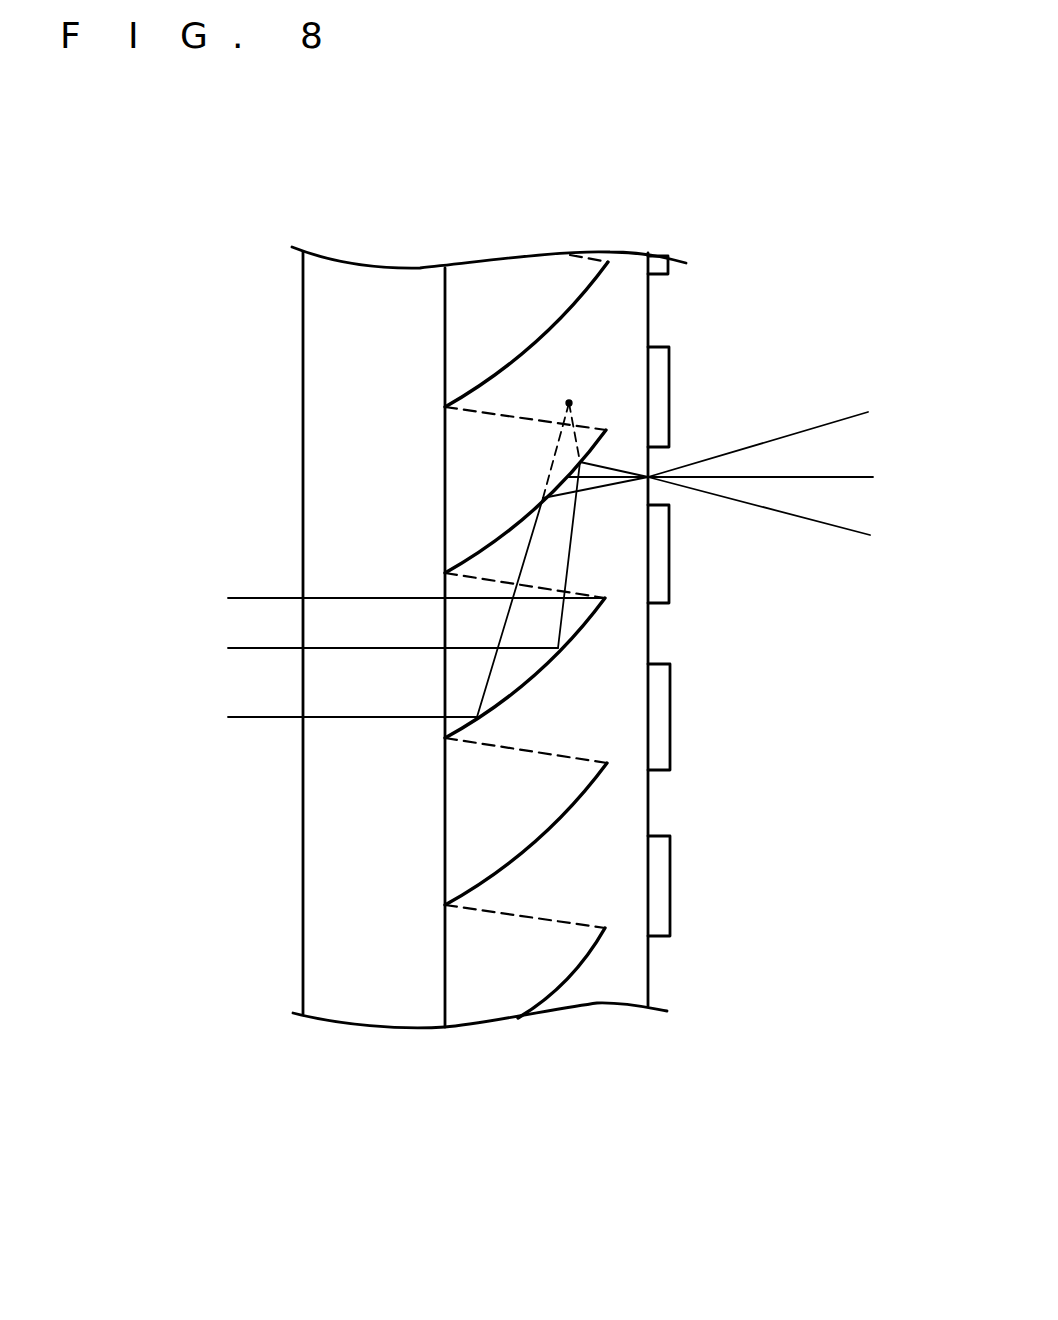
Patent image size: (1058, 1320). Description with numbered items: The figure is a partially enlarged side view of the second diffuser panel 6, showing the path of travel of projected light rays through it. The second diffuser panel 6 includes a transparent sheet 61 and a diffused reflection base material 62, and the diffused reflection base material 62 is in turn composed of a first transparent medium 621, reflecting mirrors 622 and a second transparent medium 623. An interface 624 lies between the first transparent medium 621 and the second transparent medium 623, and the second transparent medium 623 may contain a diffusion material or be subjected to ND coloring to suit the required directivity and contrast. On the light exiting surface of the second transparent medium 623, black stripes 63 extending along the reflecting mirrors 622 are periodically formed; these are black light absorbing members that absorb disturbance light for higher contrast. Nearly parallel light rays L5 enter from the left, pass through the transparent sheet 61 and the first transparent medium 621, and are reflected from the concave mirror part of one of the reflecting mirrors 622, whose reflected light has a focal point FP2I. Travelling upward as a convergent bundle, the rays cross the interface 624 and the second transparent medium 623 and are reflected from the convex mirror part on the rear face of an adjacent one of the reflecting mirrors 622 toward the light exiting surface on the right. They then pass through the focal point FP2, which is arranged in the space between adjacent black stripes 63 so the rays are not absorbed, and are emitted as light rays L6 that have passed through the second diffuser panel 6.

The second diffuser panel 6 is at (645, 206).
The transparent sheet 61 is at (353, 1005).
The diffused reflection base material 62 is at (658, 1200).
The first transparent medium 621 is at (482, 985).
The reflecting mirrors 622 is at (558, 973).
The second transparent medium 623 is at (617, 987).
The interface 624 is at (528, 920).
The black stripes 63 is at (670, 908).
The focal point FP2 is at (648, 475).
The focal point FP2I is at (570, 402).
The light rays L5 is at (178, 653).
The light rays L6 is at (840, 503).